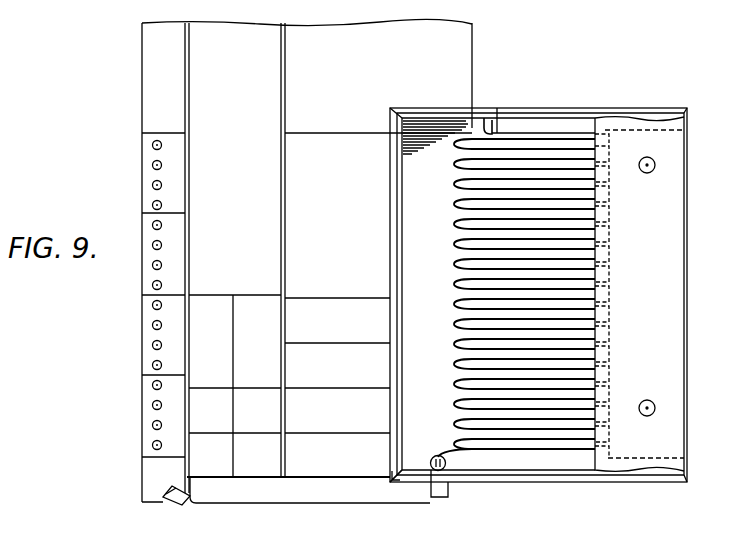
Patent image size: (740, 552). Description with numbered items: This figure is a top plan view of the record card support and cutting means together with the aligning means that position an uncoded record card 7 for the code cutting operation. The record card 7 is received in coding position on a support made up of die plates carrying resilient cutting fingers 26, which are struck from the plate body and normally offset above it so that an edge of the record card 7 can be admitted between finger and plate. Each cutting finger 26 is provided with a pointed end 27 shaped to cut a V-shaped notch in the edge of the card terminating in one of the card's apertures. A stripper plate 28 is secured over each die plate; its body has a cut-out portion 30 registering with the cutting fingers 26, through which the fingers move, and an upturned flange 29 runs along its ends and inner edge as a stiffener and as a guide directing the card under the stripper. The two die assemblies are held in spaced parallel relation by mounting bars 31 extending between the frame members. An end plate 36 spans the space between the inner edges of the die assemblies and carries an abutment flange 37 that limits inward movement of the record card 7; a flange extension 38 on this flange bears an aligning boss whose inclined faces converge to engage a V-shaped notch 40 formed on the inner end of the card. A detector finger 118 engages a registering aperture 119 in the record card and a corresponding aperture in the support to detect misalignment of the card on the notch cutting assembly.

The record card 7 is at (307, 260).
The cutting fingers 26 is at (557, 167).
The pointed end 27 is at (460, 206).
The stripper plate 28 is at (538, 295).
The upturned flange 29 is at (391, 469).
The cut-out portion 30 is at (488, 128).
The mounting bars 31 is at (639, 294).
The end plate 36 is at (327, 503).
The abutment flange 37 is at (267, 503).
The flange extension 38 is at (170, 490).
The V-shaped notch 40 is at (165, 493).
The finger 118 is at (434, 468).
The registering aperture 119 is at (475, 455).